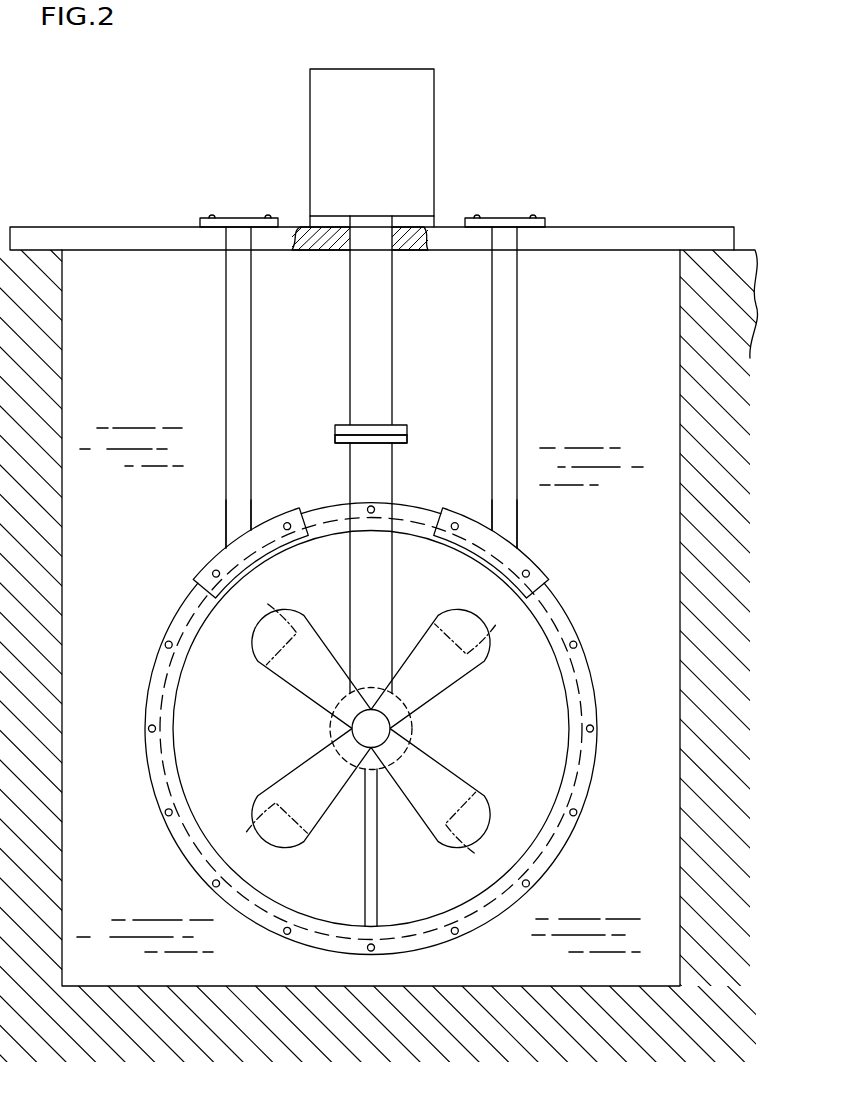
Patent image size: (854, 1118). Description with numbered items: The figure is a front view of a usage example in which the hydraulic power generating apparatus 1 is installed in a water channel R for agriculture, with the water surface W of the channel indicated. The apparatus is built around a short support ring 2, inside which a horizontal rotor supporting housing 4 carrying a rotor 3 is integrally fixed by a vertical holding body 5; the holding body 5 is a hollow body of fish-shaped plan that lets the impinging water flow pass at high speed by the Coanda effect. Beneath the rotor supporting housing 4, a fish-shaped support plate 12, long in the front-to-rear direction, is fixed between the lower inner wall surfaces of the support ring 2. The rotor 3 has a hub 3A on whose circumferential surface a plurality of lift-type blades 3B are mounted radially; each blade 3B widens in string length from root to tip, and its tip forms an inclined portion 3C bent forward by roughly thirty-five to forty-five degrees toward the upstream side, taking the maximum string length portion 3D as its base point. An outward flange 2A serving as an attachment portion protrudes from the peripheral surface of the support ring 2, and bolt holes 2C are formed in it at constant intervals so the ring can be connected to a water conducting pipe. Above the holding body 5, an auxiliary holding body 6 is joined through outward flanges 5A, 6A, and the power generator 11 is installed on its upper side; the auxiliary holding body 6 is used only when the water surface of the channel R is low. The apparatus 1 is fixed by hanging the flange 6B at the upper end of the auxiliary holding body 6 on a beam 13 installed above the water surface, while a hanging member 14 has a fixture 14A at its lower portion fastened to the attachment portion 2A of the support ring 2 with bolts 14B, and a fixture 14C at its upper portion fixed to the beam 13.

The hydraulic power generating apparatus 1 is at (575, 178).
The support ring 2 is at (388, 729).
The outward flange 2A is at (558, 600).
The bolt holes 2C is at (578, 645).
The rotor 3 is at (371, 712).
The hub 3A is at (350, 730).
The lift-type blade 3B is at (283, 690).
The inclined portion 3C is at (252, 641).
The maximum string length portion 3D is at (276, 606).
The rotor supporting housing 4 is at (413, 724).
The holding body 5 is at (393, 583).
The outward flange 5A is at (408, 441).
The auxiliary holding body 6 is at (403, 345).
The outward flange 6A is at (408, 430).
The flange 6B is at (433, 233).
The power generator 11 is at (436, 105).
The support plate 12 is at (365, 883).
The beam 13 is at (660, 227).
The hanging member 14 is at (387, 373).
The fixture 14A is at (220, 553).
The bolts 14B is at (198, 574).
The fixture 14C is at (232, 218).
The water channel R is at (91, 297).
The water W is at (125, 427).